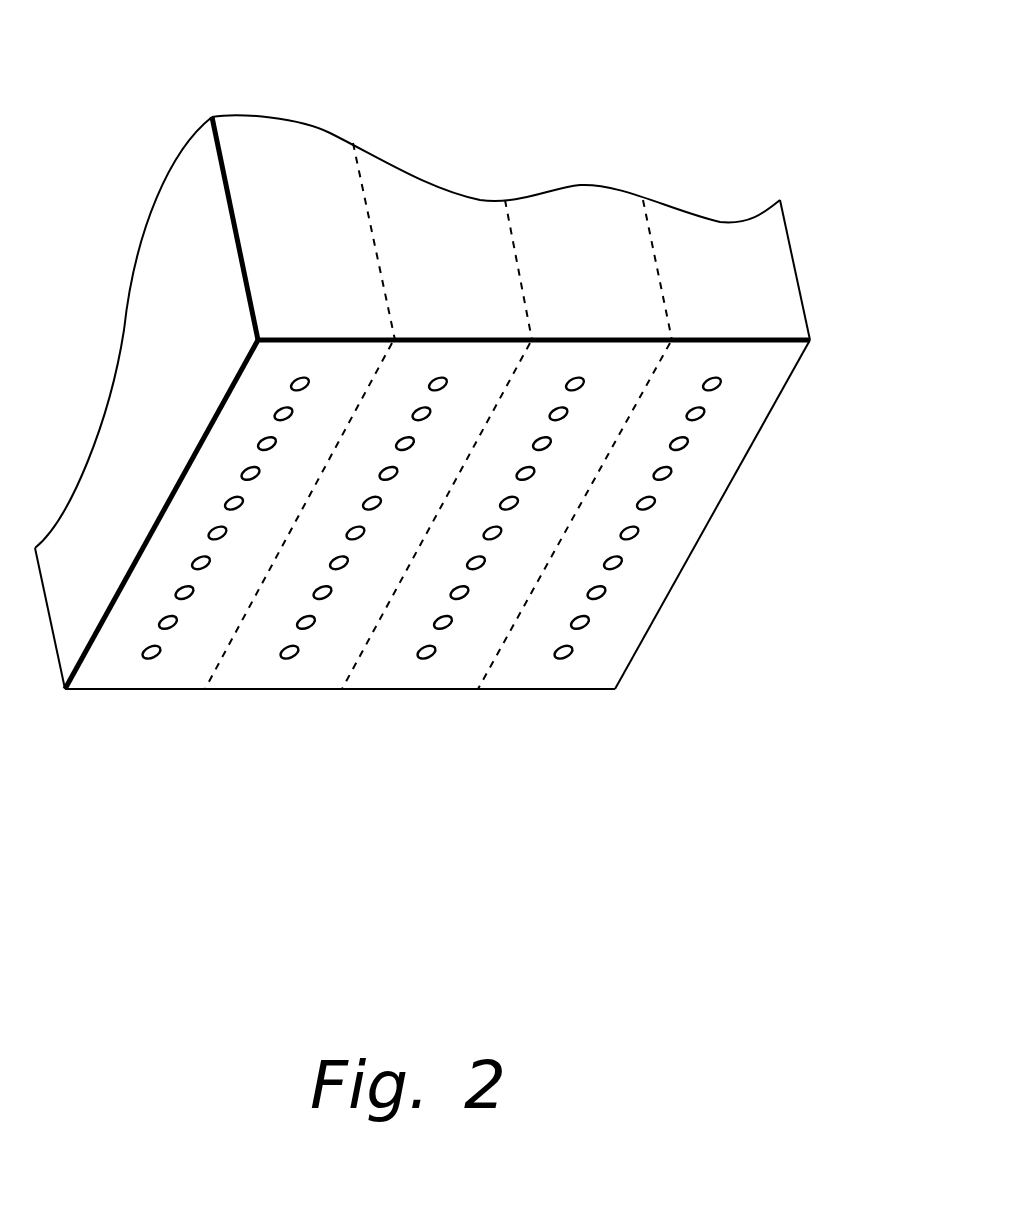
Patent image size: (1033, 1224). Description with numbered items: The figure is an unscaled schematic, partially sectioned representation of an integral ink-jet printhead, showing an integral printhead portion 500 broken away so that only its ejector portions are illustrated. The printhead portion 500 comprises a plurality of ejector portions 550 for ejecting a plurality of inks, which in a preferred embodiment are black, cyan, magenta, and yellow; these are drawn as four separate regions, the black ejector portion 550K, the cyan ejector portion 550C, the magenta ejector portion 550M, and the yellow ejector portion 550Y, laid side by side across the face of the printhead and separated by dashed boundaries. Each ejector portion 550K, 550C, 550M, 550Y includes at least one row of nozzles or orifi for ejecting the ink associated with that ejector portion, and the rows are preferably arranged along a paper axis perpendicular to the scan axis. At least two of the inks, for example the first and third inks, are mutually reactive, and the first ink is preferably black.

The integral printhead portion 500 is at (724, 582).
The ejector portions 550 is at (493, 435).
The black ejector portion 550K is at (324, 330).
The cyan ejector portion 550C is at (463, 330).
The magenta ejector portion 550M is at (594, 332).
The yellow ejector portion 550Y is at (735, 332).